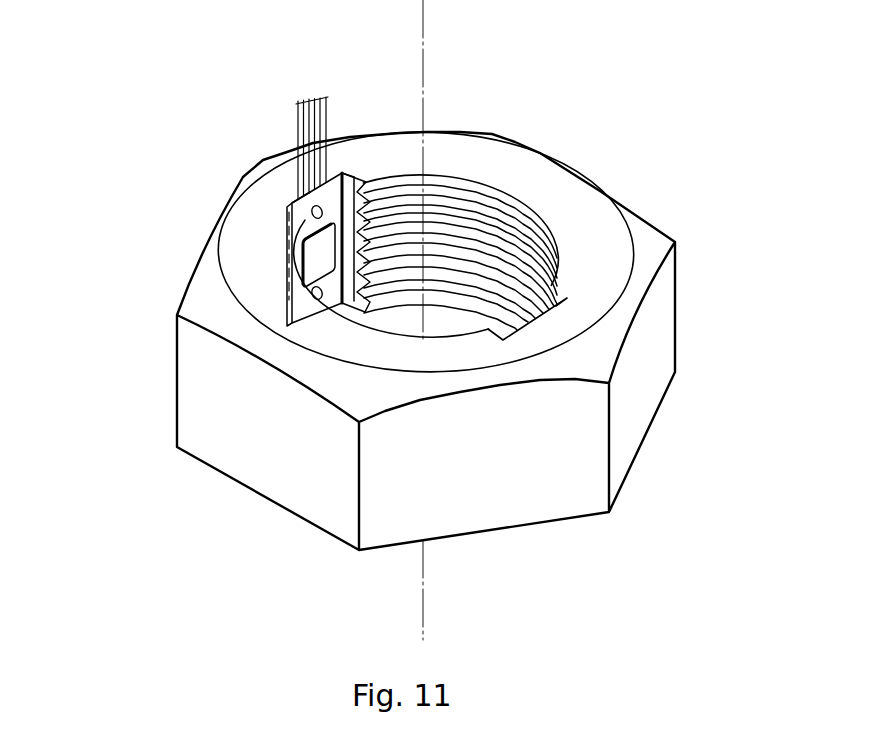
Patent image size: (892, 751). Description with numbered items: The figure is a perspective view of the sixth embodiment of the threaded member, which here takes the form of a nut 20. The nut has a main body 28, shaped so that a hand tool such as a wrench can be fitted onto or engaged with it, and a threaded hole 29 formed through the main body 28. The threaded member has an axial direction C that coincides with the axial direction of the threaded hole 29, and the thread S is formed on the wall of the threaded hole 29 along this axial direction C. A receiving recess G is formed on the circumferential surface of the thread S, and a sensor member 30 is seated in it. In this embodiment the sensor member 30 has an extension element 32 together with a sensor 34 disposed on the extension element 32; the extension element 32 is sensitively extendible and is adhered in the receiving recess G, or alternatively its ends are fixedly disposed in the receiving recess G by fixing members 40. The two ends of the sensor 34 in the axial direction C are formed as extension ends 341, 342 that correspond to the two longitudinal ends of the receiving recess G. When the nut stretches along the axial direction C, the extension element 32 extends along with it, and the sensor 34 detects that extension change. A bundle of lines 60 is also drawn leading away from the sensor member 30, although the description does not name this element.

The nut 20 is at (505, 304).
The main body 28 is at (645, 233).
The threaded hole 29 is at (477, 178).
The thread S is at (523, 220).
The axial direction C is at (425, 50).
The receiving recess G is at (337, 145).
The sensor member 30 is at (194, 223).
The extension element 32 is at (287, 208).
The sensor 34 is at (310, 250).
The extension end 341 is at (311, 210).
The extension end 342 is at (307, 292).
The fixing member 40 is at (303, 217).
The wires 60 is at (295, 137).